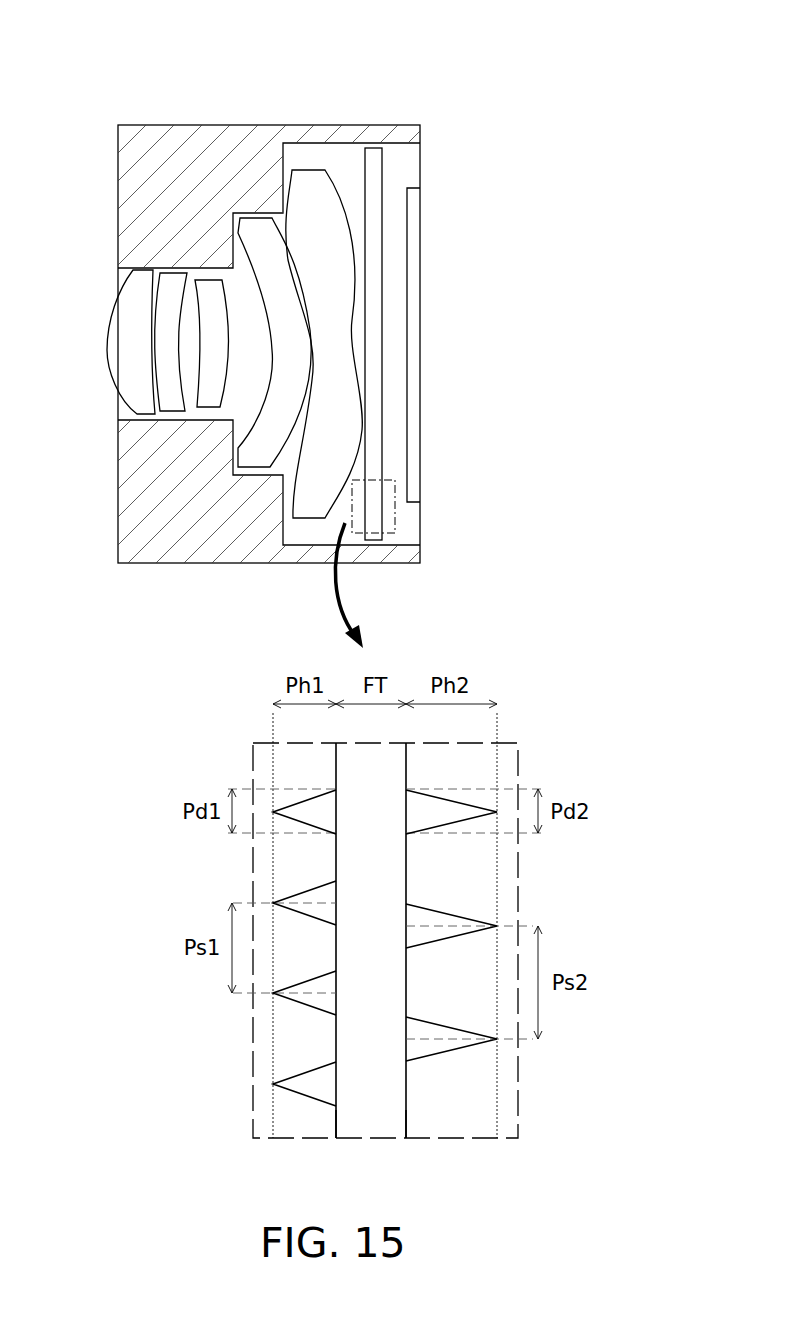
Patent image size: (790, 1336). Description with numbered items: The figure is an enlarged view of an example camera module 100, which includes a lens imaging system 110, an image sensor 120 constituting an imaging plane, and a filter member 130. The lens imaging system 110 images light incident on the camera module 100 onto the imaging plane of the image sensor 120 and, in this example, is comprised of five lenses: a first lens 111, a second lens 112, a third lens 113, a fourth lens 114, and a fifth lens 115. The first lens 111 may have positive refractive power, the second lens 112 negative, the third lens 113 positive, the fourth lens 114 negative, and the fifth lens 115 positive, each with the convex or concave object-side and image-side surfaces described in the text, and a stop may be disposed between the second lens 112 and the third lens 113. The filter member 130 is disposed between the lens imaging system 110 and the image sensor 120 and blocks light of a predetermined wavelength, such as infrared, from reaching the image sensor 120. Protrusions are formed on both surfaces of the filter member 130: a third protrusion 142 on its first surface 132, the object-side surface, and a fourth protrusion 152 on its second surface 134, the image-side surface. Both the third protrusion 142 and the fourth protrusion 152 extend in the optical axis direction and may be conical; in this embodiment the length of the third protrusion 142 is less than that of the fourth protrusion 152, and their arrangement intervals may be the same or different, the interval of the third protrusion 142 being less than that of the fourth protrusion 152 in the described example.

The camera module 100 is at (394, 104).
The lens imaging system 110 is at (75, 50).
The first lens 111 is at (143, 283).
The second lens 112 is at (175, 283).
The third lens 113 is at (212, 285).
The fourth lens 114 is at (260, 230).
The fifth lens 115 is at (312, 182).
The image sensor 120 is at (413, 302).
The filter member 130 is at (372, 380).
The first surface 132 is at (332, 1117).
The second surface 134 is at (407, 1117).
The third protrusion 142 is at (305, 1072).
The fourth protrusion 152 is at (438, 1057).